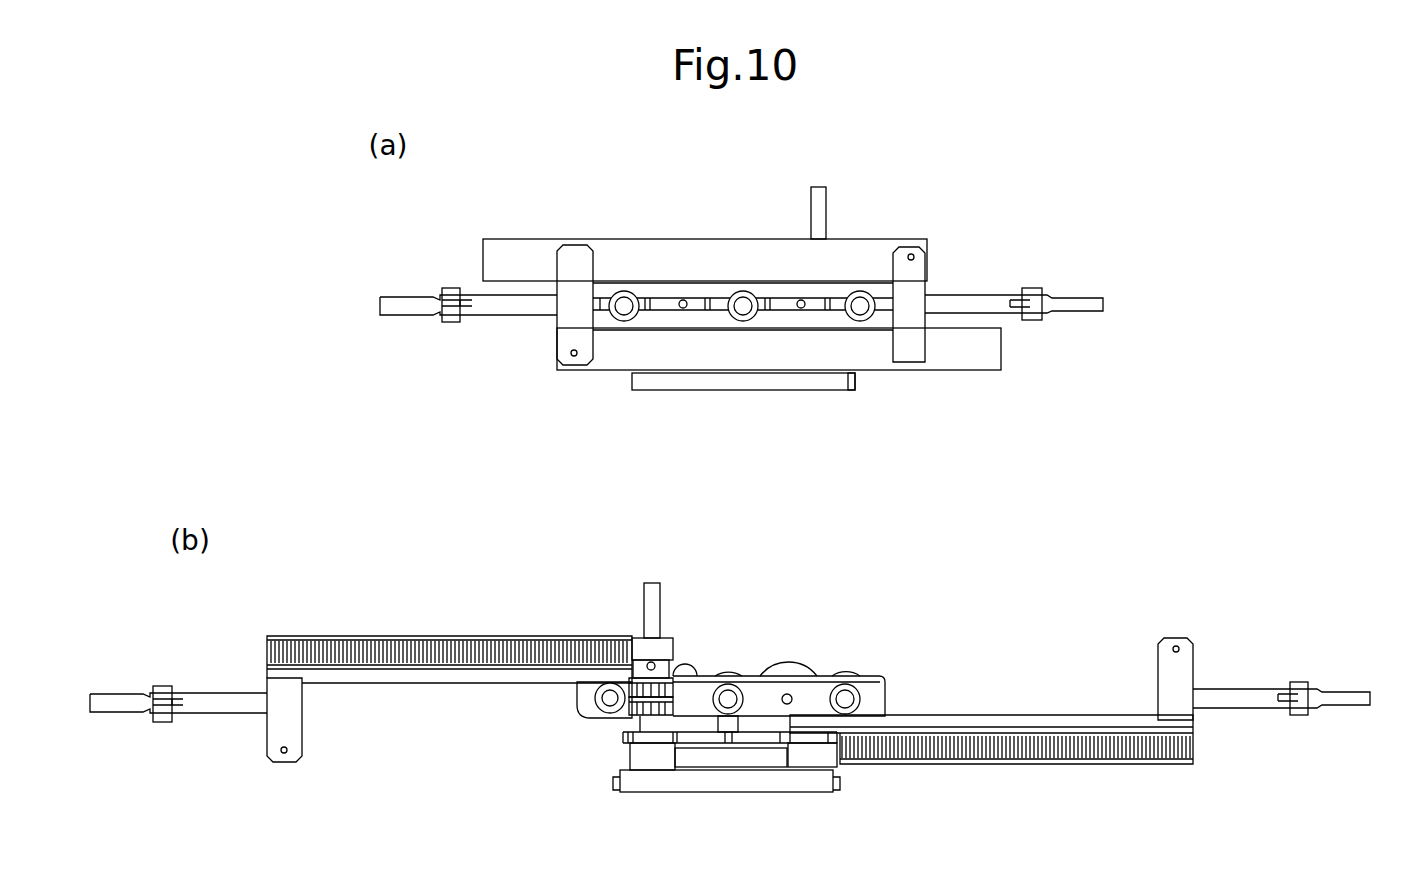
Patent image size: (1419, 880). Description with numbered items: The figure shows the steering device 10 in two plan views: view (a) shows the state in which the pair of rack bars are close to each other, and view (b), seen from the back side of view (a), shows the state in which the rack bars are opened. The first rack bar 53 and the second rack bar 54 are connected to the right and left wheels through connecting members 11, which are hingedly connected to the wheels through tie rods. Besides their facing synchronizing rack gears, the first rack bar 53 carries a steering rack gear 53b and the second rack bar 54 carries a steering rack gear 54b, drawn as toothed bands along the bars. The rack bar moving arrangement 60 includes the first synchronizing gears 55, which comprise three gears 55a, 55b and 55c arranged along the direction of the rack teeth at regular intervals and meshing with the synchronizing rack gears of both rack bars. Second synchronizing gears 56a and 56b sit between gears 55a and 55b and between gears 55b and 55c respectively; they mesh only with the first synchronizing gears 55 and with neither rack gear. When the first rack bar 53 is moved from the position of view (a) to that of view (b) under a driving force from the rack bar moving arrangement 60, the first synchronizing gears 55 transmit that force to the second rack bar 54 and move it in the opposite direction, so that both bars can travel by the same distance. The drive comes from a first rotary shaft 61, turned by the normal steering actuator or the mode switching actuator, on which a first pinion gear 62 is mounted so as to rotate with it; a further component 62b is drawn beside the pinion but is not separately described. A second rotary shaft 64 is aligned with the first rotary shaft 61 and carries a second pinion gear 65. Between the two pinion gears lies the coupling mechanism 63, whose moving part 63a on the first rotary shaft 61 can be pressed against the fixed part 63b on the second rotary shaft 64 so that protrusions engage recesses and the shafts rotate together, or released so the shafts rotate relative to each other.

The steering device 10 is at (934, 223).
The connecting member 11 is at (992, 300).
The first rack bar 53 is at (540, 268).
The steering rack gear 53b is at (423, 655).
The second rack bar 54 is at (957, 340).
The steering rack gear 54b is at (1028, 752).
The first synchronizing gears 55 is at (738, 570).
The gear 55a is at (622, 320).
The gear 55b is at (744, 320).
The gear 55c is at (862, 502).
The second synchronizing gear 56a is at (797, 298).
The second synchronizing gear 56b is at (683, 298).
The rack bar moving arrangement 60 is at (626, 616).
The first rotary shaft 61 is at (822, 215).
The first pinion gear 62 is at (645, 652).
The base plate block 62b is at (808, 753).
The coupling mechanism 63 is at (567, 738).
The moving part 63a is at (633, 690).
The fixed part 63b is at (638, 705).
The second rotary shaft 64 is at (678, 745).
The second pinion gear 65 is at (657, 758).